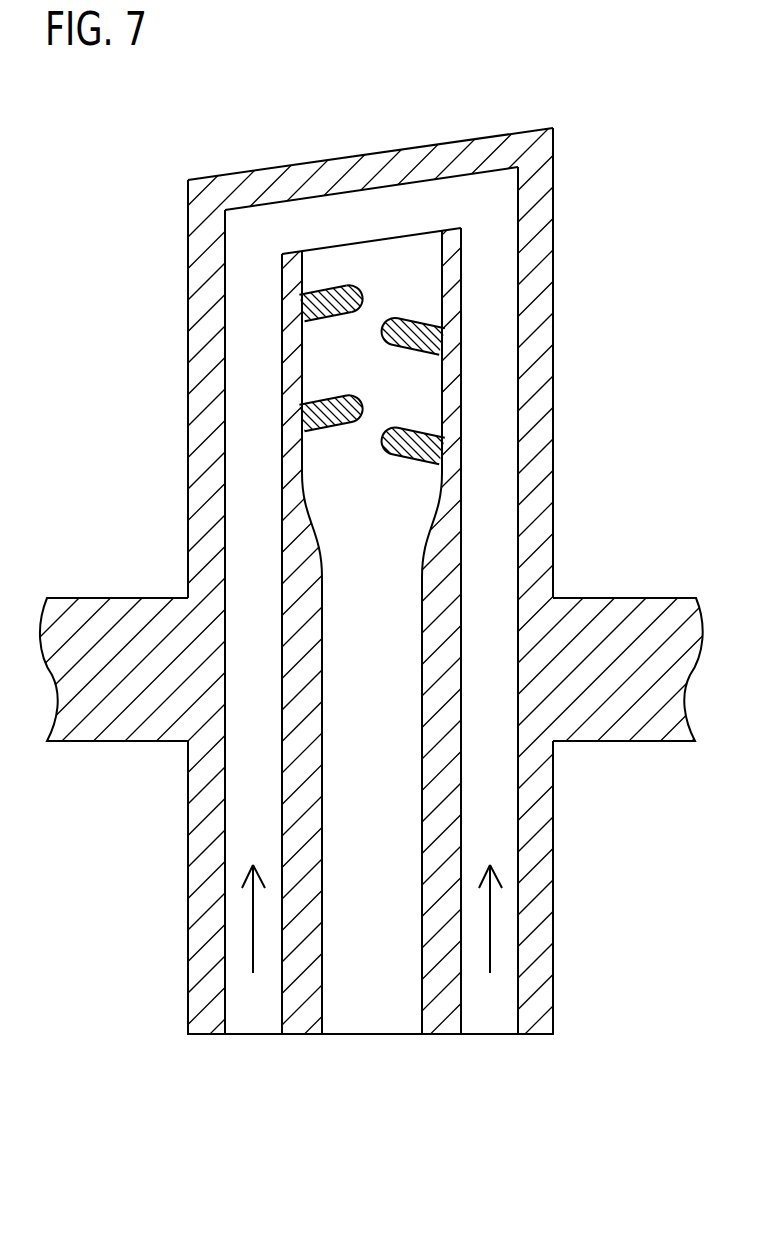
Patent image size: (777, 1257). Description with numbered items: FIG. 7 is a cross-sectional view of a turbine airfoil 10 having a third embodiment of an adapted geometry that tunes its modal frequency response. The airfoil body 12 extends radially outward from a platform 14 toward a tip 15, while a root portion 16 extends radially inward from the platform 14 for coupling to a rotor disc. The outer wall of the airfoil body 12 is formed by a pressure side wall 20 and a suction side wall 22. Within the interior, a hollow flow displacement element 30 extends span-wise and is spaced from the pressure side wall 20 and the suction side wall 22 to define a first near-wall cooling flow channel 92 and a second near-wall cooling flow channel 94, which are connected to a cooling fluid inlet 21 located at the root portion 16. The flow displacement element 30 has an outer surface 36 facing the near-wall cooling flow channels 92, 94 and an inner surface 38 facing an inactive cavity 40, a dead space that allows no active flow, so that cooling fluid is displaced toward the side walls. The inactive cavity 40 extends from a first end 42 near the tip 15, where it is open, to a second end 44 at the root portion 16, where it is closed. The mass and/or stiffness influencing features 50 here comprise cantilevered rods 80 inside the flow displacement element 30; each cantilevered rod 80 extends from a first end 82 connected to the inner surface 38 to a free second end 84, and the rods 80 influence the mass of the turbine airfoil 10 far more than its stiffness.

The turbine airfoil 10 is at (638, 73).
The airfoil body 12 is at (160, 190).
The platform 14 is at (628, 599).
The tip 15 is at (370, 152).
The root portion 16 is at (145, 878).
The pressure side wall 20 is at (555, 237).
The cooling fluid inlet 21 is at (488, 1036).
The suction side wall 22 is at (188, 258).
The flow displacement element 30 is at (490, 425).
The outer surface 36 is at (462, 303).
The inner surface 38 is at (427, 545).
The inactive cavity 40 is at (383, 750).
The first end 42 is at (372, 240).
The second end 44 is at (370, 1036).
The mass and/or stiffness influencing features 50 is at (388, 628).
The cantilevered rod 80 is at (388, 628).
The first end 82 is at (327, 302).
The second end 84 is at (360, 292).
The first near-wall cooling flow channel 92 is at (492, 545).
The second near-wall cooling flow channel 94 is at (253, 520).